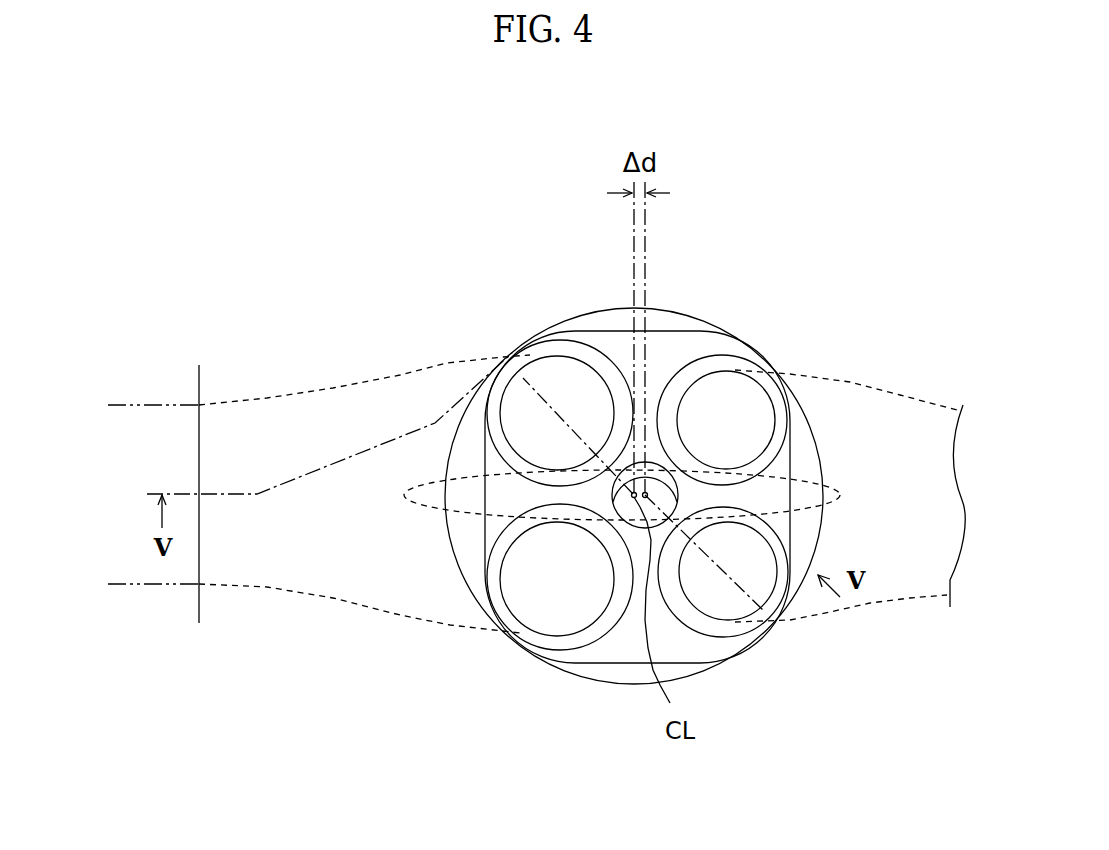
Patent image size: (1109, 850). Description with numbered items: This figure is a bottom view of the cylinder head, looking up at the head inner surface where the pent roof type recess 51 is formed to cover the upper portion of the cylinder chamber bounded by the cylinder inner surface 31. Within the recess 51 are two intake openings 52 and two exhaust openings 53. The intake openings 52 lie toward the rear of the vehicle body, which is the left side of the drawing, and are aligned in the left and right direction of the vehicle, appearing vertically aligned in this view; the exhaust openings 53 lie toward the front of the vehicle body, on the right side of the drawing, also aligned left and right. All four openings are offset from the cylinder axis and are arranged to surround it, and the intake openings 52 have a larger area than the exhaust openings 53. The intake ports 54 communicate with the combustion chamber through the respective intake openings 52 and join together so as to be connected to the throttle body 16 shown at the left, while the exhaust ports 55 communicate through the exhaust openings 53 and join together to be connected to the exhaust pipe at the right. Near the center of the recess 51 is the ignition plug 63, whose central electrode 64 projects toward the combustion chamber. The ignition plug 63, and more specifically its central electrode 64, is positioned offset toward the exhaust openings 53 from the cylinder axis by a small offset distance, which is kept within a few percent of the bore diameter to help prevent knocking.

The throttle body 16 is at (158, 402).
The cylinder inner surface 31 is at (715, 323).
The recess 51 is at (627, 663).
The intake openings 52 is at (566, 345).
The exhaust openings 53 is at (730, 370).
The intake ports 54 is at (447, 363).
The exhaust ports 55 is at (882, 388).
The ignition plug 63 is at (590, 607).
The central electrode 64 is at (646, 492).